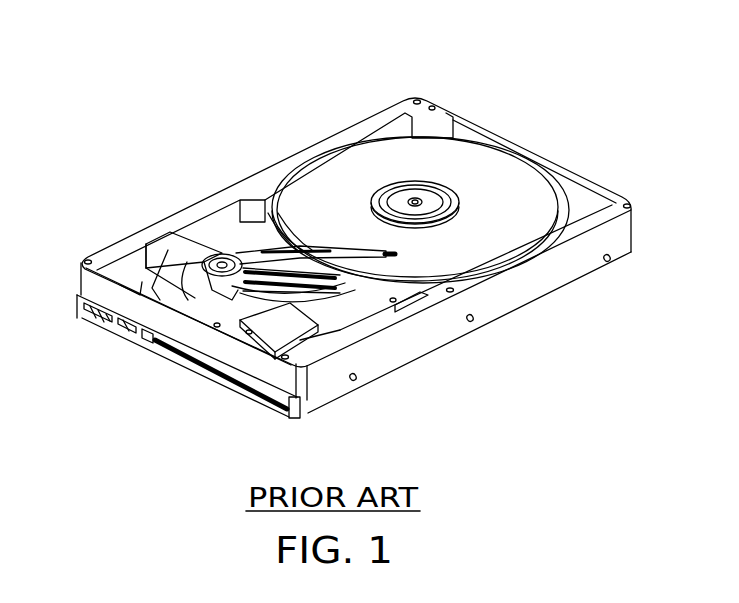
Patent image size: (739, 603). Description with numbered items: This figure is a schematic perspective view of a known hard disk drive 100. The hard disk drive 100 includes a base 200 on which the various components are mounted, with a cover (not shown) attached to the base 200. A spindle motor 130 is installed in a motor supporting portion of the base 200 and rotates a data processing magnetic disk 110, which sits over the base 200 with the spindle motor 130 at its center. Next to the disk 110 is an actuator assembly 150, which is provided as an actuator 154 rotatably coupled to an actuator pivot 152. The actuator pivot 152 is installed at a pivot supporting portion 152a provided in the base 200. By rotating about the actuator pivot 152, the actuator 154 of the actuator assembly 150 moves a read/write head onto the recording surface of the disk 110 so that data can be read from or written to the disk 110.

The hard disk drive 100 is at (352, 95).
The data processing magnetic disk 110 is at (530, 190).
The spindle motor 130 is at (432, 197).
The actuator assembly 150 is at (213, 320).
The actuator pivot 152 is at (205, 248).
The pivot supporting portion 152a is at (150, 247).
The actuator 154 is at (232, 280).
The base 200 is at (512, 298).